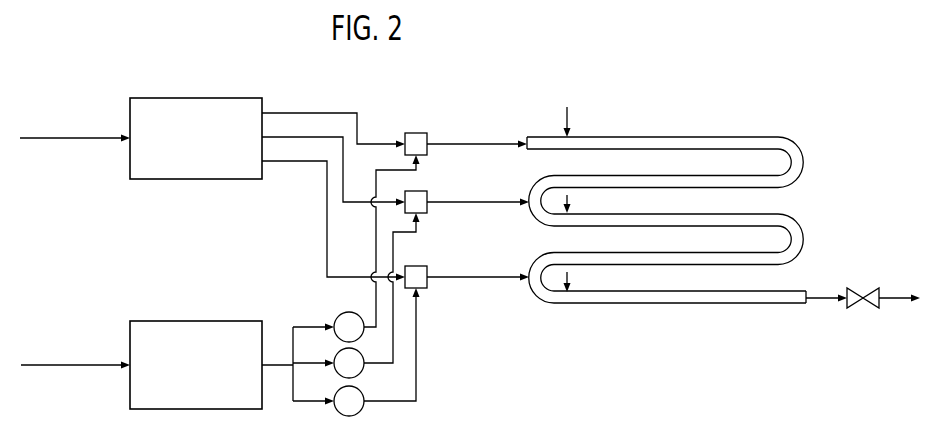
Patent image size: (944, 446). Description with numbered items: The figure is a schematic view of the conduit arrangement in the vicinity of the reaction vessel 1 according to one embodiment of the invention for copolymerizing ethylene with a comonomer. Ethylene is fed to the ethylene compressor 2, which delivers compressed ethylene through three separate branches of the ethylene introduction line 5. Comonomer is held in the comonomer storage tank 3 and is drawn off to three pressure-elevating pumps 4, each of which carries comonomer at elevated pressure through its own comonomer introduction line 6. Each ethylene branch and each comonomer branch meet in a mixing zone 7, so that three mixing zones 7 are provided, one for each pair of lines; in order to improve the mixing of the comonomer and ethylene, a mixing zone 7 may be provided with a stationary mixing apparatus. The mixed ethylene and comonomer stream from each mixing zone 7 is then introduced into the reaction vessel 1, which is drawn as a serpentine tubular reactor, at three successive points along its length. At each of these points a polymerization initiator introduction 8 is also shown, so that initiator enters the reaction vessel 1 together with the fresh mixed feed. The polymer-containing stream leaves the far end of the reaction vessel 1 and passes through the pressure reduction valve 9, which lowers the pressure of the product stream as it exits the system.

The reaction vessel 1 is at (662, 123).
The ethylene compressor 2 is at (166, 97).
The comonomer storage tank 3 is at (158, 320).
The pressure-elevating pump 4 is at (359, 339).
The ethylene introduction line 5 is at (330, 108).
The comonomer introduction line 6 is at (376, 300).
The mixing zone 7 is at (484, 142).
The polymerization initiator introduction 8 is at (567, 113).
The pressure reduction valve 9 is at (860, 290).